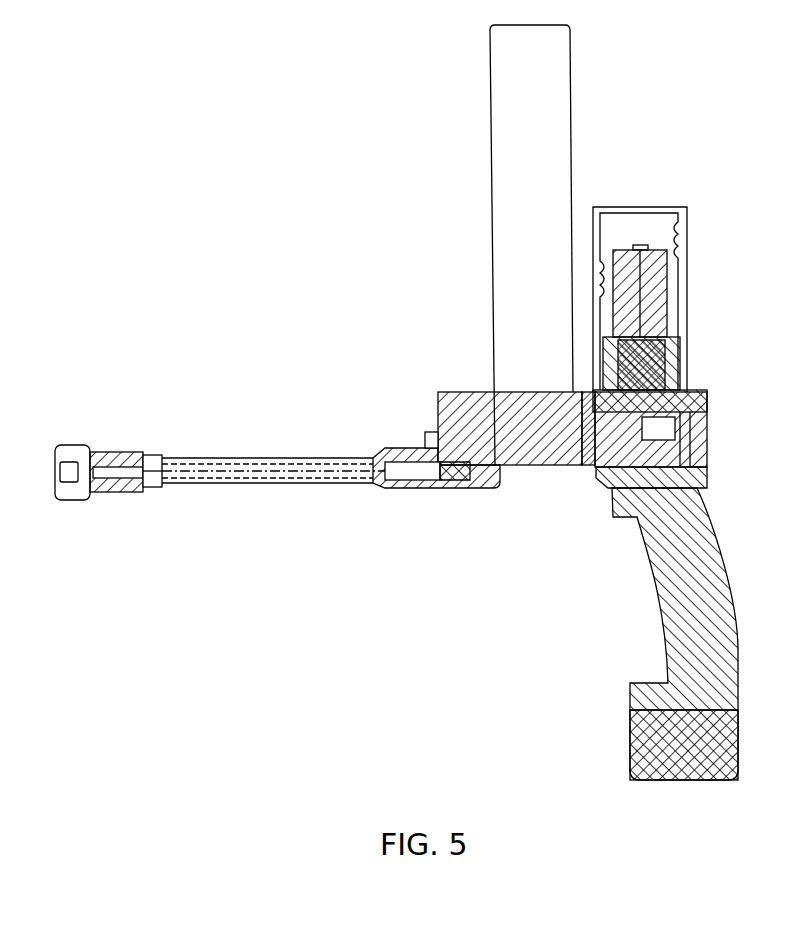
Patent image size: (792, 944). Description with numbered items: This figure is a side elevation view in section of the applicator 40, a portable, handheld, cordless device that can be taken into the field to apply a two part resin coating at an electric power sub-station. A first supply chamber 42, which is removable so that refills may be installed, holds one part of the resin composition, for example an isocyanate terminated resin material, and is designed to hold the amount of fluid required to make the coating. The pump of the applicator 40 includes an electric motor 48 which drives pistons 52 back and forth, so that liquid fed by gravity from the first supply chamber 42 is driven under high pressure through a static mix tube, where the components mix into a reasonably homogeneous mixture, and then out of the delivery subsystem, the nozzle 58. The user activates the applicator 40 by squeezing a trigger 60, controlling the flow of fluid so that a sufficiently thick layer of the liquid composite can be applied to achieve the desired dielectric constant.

The applicator 40 is at (308, 255).
The first supply chamber 42 is at (493, 163).
The electric motor 48 is at (670, 333).
The pistons 52 is at (588, 467).
The nozzle 58 is at (108, 455).
The trigger 60 is at (617, 517).